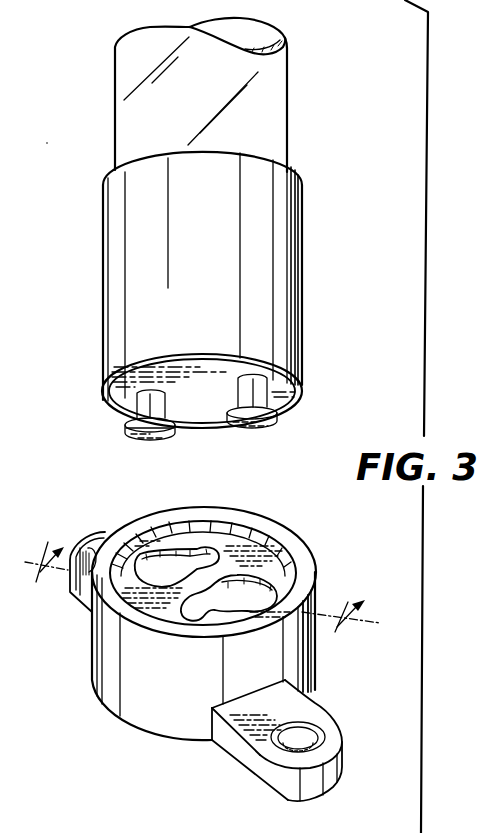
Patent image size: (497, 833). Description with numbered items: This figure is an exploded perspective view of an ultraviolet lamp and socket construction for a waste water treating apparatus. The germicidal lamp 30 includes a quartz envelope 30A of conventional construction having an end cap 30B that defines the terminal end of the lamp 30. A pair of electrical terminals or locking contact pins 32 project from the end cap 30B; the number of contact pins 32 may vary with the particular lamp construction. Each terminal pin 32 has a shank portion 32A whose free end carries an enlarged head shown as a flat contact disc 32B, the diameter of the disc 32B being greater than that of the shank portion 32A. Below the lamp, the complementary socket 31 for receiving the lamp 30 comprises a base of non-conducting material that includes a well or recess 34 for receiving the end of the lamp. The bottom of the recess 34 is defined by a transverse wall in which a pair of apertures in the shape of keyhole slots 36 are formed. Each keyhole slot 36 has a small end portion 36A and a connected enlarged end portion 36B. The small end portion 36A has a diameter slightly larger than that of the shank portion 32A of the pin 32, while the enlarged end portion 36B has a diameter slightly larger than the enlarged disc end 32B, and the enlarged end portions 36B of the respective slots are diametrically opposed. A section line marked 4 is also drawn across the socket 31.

The germicidal lamp 30 is at (268, 140).
The quartz envelope 30A is at (275, 103).
The end cap 30B is at (263, 298).
The locking contact pins 32 is at (118, 428).
The shank portion 32A is at (152, 392).
The flat contact disc 32B is at (262, 424).
The socket 31 is at (318, 677).
The recess 34 is at (252, 553).
The keyhole slot 36 is at (205, 546).
The small end portion 36A is at (203, 612).
The enlarged end portion 36B is at (250, 573).
The section line 4- 4 is at (202, 599).